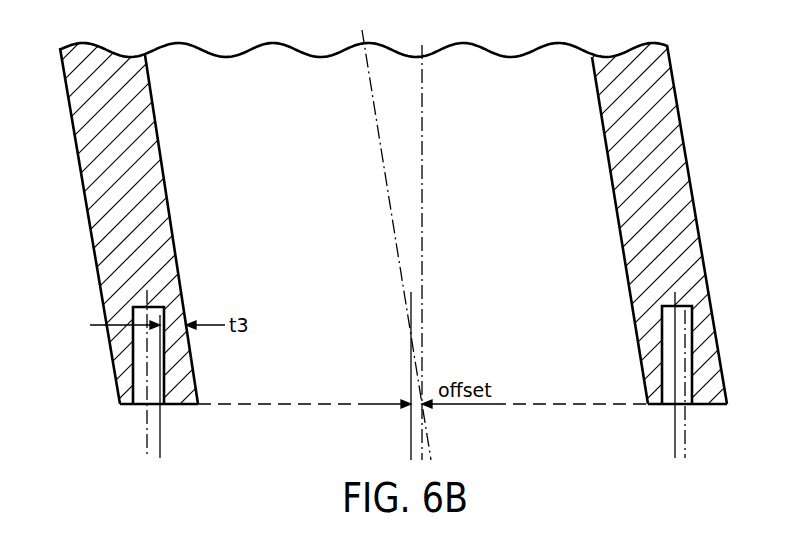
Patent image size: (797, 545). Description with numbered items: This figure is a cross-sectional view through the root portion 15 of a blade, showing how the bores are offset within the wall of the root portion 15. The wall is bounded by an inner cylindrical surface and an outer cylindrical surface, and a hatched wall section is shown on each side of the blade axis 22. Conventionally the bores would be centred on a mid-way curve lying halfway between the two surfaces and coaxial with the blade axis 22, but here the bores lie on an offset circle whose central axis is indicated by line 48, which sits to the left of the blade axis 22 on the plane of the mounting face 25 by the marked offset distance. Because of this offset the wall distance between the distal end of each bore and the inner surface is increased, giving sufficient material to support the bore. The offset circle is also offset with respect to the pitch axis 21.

The root portion 15 is at (704, 98).
The pitch axis 21 is at (424, 245).
The blade axis 22 is at (430, 443).
The mounting face 25 is at (183, 404).
The central axis of offset circle 48 is at (411, 431).